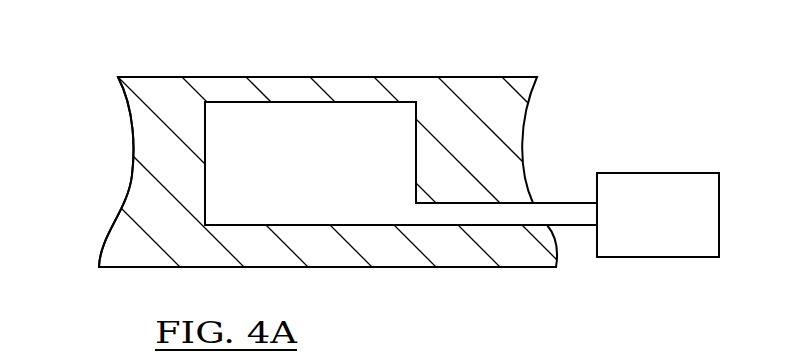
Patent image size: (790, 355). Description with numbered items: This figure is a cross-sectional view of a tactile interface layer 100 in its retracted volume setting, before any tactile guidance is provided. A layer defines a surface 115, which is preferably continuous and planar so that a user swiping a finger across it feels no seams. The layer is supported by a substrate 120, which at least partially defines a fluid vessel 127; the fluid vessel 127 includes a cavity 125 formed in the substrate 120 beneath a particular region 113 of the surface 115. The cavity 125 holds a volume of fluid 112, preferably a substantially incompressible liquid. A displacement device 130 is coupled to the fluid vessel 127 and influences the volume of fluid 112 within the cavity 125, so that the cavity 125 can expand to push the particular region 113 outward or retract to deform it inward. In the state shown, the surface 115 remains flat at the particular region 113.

The tactile interface layer 100 is at (359, 163).
The fluid 112 is at (255, 137).
The particular region 113 is at (298, 77).
The surface 115 is at (160, 77).
The substrate 120 is at (510, 128).
The cavity 125 is at (339, 173).
The fluid vessel 127 is at (355, 193).
The displacement device 130 is at (626, 215).